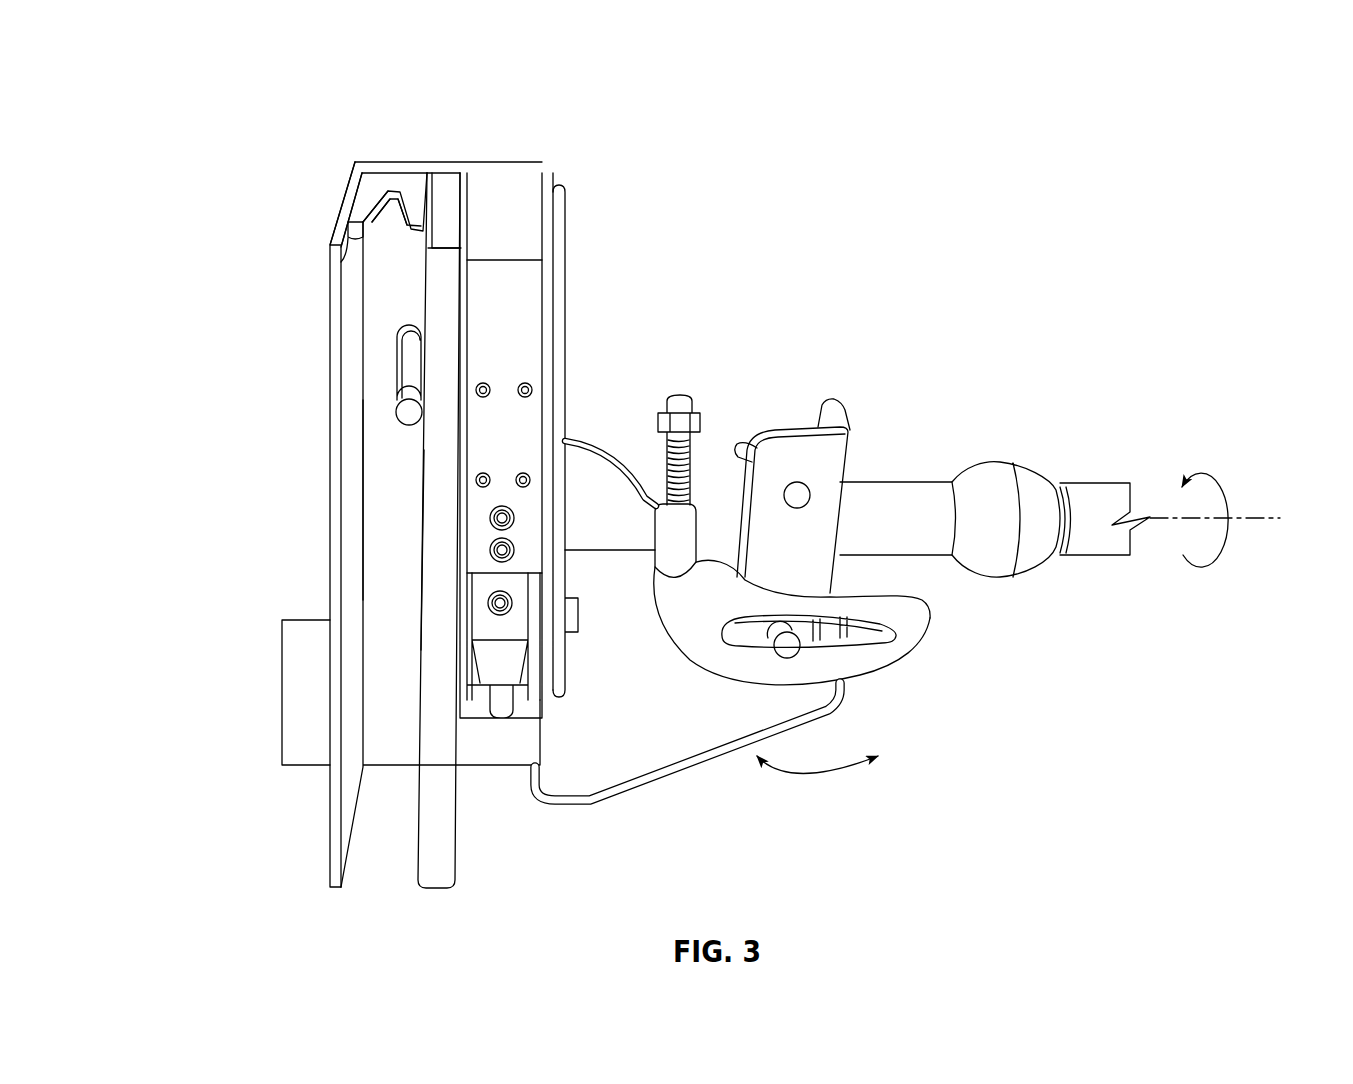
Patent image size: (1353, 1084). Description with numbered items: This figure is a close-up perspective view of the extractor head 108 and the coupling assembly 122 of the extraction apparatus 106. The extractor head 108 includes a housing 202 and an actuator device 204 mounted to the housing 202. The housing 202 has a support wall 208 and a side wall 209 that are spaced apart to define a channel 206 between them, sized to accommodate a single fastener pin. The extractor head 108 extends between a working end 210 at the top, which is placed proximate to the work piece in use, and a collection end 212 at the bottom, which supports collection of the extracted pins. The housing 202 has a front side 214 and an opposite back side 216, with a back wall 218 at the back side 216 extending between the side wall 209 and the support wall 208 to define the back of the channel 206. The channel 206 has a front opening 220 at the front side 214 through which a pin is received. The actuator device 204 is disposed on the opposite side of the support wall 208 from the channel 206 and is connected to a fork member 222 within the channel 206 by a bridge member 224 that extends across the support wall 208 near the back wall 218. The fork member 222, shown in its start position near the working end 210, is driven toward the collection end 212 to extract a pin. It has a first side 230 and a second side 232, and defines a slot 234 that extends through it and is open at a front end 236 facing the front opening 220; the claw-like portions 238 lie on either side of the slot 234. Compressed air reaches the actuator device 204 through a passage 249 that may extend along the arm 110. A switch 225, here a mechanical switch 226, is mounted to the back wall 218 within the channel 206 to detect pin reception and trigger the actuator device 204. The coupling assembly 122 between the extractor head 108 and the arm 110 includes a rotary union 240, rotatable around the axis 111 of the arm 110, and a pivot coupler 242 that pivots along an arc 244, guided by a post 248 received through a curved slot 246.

The extraction apparatus 106 is at (758, 137).
The extractor head 108 is at (232, 288).
The arm 110 is at (1093, 490).
The axis 111 is at (1150, 522).
The coupling assembly 122 is at (897, 355).
The housing 202 is at (405, 167).
The actuator device 204 is at (533, 280).
The channel 206 is at (350, 509).
The support wall 208 is at (428, 541).
The side wall 209 is at (330, 614).
The working end 210 is at (481, 155).
The collection end 212 is at (474, 853).
The front side 214 is at (332, 358).
The back side 216 is at (382, 160).
The back wall 218 is at (523, 163).
The front opening 220 is at (338, 477).
The fork member 222 is at (420, 200).
The bridge member 224 is at (443, 172).
The switch 225 is at (390, 413).
The mechanical switch 226 is at (390, 400).
The first side 230 is at (350, 223).
The second side 232 is at (356, 242).
The slot 234 is at (384, 188).
The front end 236 is at (386, 232).
The portions 238 is at (363, 205).
The rotary union 240 is at (1028, 478).
The pivot coupler 242 is at (693, 640).
The arc 244 is at (830, 773).
The curved slot 246 is at (840, 656).
The post 248 is at (787, 656).
The passage 249 is at (620, 797).